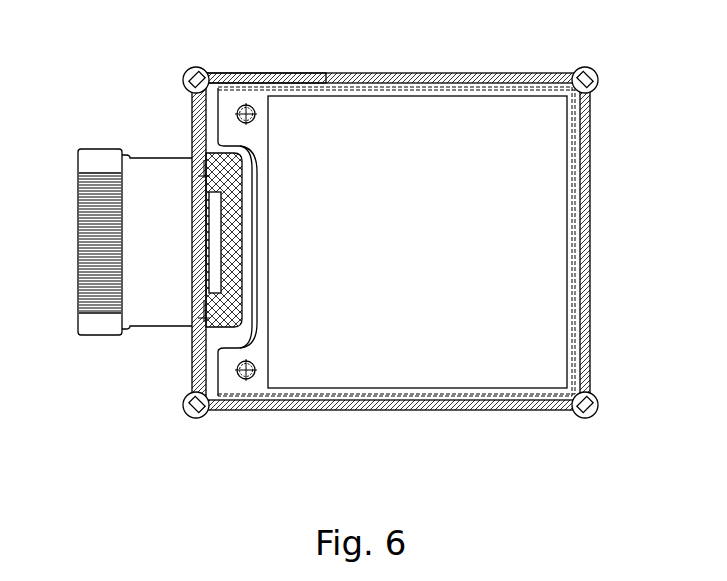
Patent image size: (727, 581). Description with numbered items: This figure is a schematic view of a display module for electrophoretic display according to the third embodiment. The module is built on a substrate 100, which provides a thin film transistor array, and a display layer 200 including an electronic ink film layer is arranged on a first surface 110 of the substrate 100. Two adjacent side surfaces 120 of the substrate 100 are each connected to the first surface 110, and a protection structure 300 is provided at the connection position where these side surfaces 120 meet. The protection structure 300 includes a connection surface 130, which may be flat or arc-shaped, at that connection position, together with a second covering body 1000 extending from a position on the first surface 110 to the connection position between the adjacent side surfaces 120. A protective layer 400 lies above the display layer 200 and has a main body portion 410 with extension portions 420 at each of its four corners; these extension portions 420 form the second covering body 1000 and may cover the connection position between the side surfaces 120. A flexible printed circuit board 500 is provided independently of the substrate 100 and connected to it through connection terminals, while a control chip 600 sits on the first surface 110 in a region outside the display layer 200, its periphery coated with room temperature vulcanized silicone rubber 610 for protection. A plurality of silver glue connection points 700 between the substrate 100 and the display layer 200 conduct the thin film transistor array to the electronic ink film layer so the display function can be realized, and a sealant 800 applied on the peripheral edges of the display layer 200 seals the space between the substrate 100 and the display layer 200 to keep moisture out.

The substrate 100 is at (385, 252).
The first surface 110 is at (328, 72).
The side surfaces 120 is at (481, 72).
The connection surface 130 is at (385, 255).
The display layer 200 is at (259, 391).
The protection structure 300 is at (385, 250).
The protective layer 400 is at (331, 399).
The main body portion 410 is at (493, 220).
The extension portions 420 is at (393, 235).
The second covering body 1000 is at (203, 78).
The flexible printed circuit board 500 is at (112, 328).
The control chip 600 is at (253, 240).
The room temperature vulcanized silicone rubber 610 is at (232, 184).
The silver glue connection points 700 is at (258, 362).
The sealant 800 is at (259, 72).